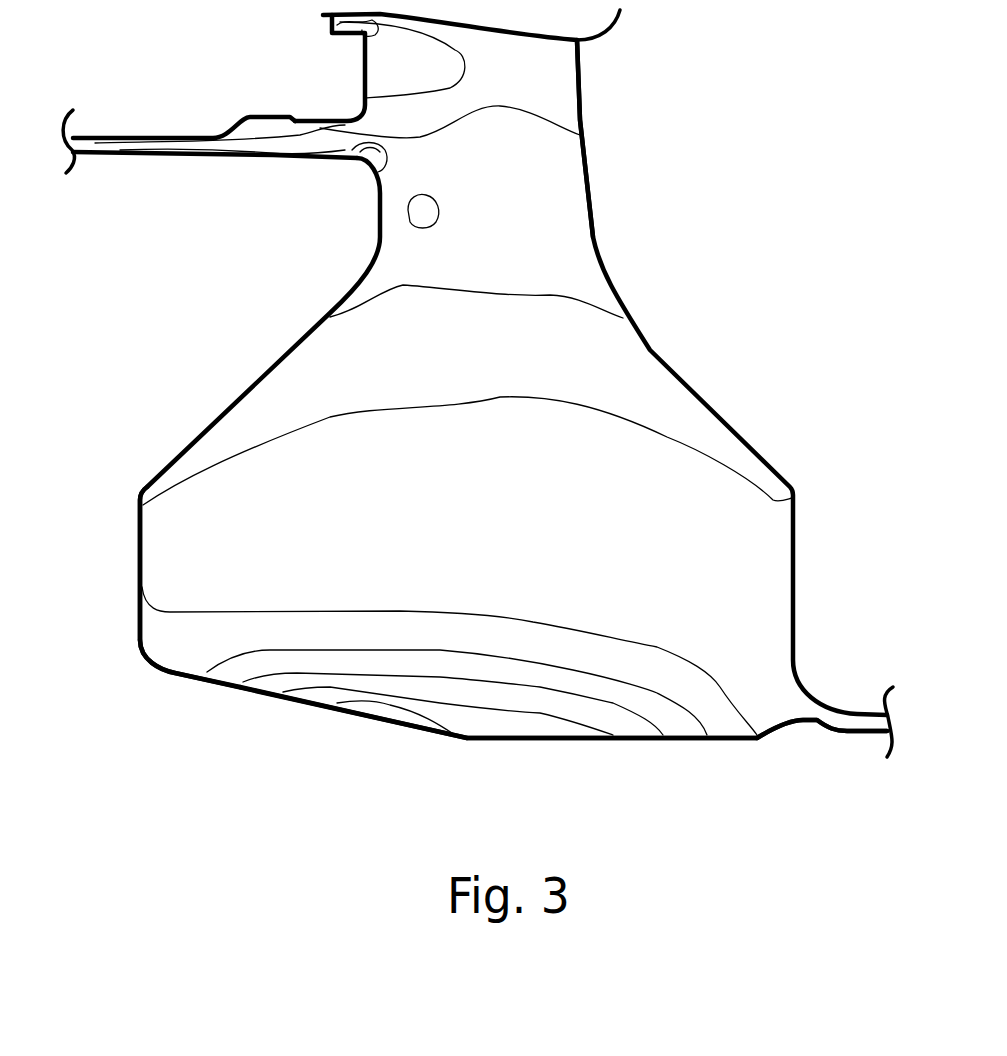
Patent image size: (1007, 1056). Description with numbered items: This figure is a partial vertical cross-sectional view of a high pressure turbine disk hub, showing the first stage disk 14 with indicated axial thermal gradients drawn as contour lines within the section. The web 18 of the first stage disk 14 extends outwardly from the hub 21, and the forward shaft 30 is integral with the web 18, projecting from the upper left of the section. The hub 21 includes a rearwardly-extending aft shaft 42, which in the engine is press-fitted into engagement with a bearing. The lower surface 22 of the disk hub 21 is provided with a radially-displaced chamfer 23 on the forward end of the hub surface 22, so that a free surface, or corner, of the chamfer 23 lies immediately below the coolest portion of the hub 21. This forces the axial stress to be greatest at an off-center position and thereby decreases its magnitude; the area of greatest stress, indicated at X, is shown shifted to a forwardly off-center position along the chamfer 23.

The first stage disk 14 is at (266, 356).
The web 18 is at (553, 55).
The hub 21 is at (170, 537).
The hub surface 22 is at (580, 740).
The chamfer 23 is at (197, 677).
The forward shaft 30 is at (132, 155).
The aft shaft 42 is at (860, 720).
The area of greatest stress X is at (382, 712).